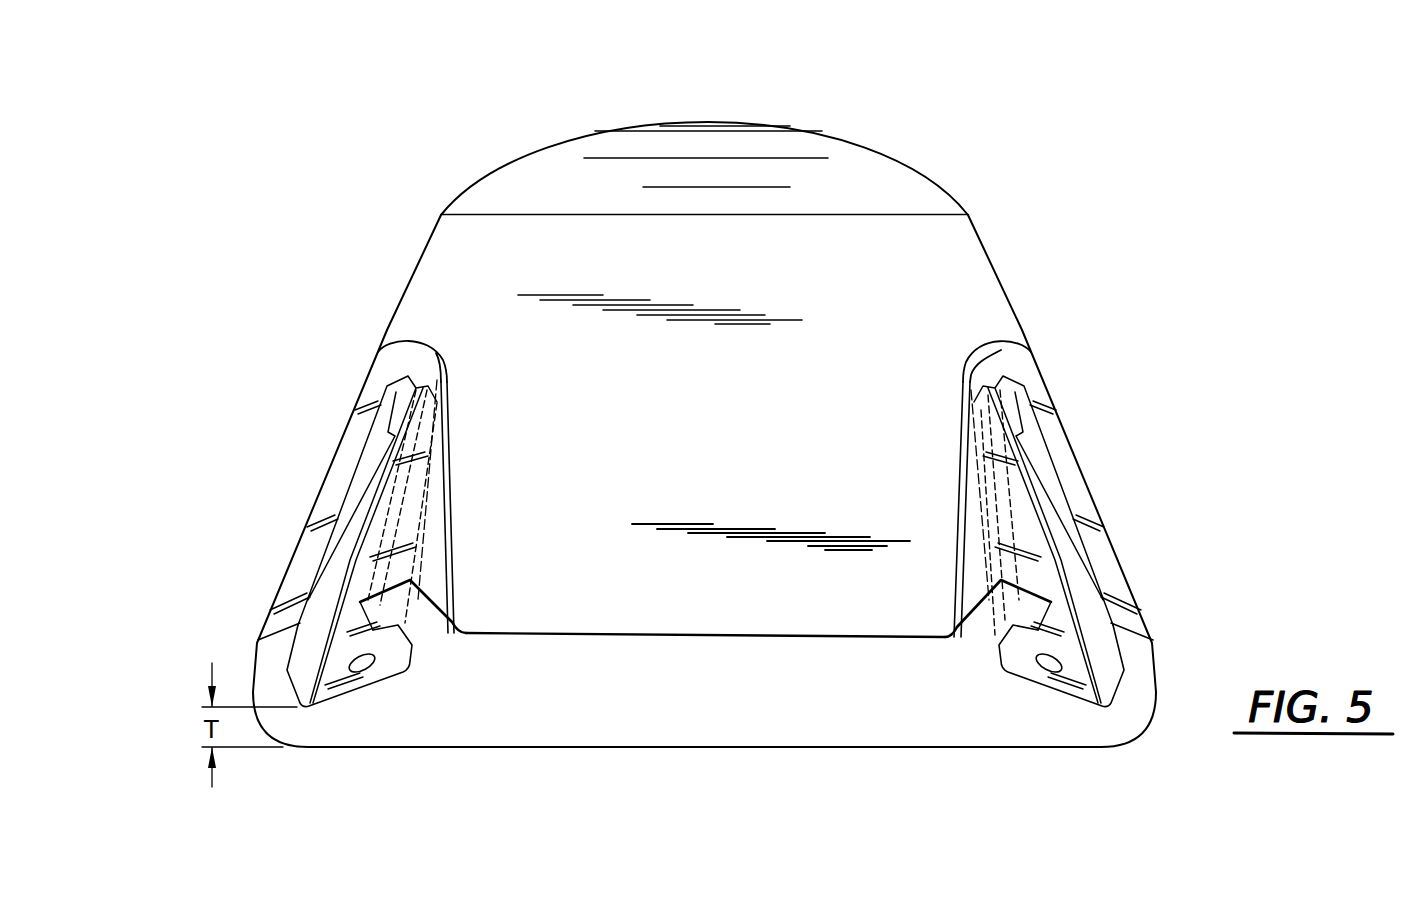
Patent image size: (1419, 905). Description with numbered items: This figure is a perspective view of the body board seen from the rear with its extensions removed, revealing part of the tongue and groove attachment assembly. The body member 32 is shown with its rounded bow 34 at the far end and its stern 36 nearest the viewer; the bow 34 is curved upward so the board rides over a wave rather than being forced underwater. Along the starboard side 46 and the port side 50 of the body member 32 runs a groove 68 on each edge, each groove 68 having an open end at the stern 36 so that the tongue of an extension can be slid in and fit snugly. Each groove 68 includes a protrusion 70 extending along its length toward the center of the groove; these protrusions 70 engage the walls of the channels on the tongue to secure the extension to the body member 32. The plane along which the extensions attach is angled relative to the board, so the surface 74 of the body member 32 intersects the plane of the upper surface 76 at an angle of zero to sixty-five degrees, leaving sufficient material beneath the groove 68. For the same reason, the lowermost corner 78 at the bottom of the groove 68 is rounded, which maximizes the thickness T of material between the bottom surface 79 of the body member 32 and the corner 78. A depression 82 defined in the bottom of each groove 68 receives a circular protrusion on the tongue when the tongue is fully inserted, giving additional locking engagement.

The body member 32 is at (668, 403).
The bow 34 is at (722, 143).
The stern 36 is at (797, 742).
The starboard side 46 is at (992, 295).
The port side 50 is at (422, 317).
The groove 68 is at (370, 512).
The protrusion 70 is at (388, 622).
The surface 74 is at (1012, 365).
The upper surface 76 is at (962, 250).
The lowermost corner 78 is at (307, 704).
The bottom surface 79 is at (347, 749).
The depression 82 is at (362, 670).